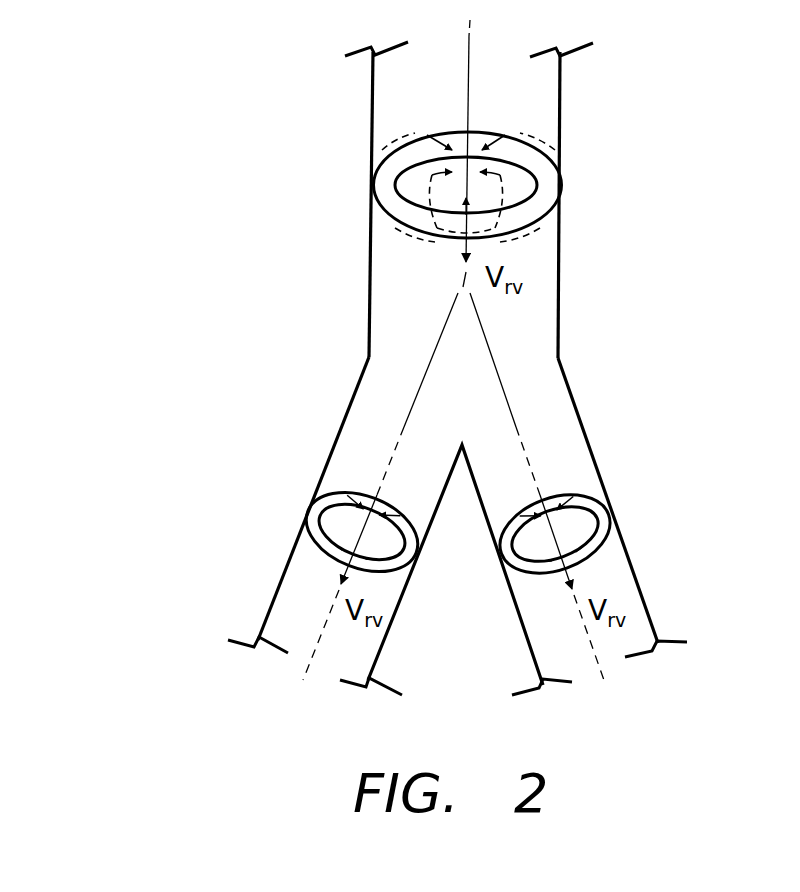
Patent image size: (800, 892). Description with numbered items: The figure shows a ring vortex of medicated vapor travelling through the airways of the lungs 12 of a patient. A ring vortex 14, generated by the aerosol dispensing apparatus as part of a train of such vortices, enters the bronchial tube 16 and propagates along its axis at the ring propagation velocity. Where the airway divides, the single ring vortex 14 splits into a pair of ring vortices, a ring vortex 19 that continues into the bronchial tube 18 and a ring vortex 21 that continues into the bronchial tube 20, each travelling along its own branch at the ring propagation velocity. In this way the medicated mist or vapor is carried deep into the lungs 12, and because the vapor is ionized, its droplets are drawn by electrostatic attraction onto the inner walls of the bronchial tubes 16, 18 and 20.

The lungs 12 is at (509, 357).
The ring vortex 14 is at (538, 164).
The bronchial tube 16 is at (437, 103).
The bronchial tube 18 is at (313, 637).
The vortex flow ring in left branch 19 is at (307, 513).
The bronchial tube 20 is at (578, 650).
The vortex flow ring in right branch 21 is at (606, 517).